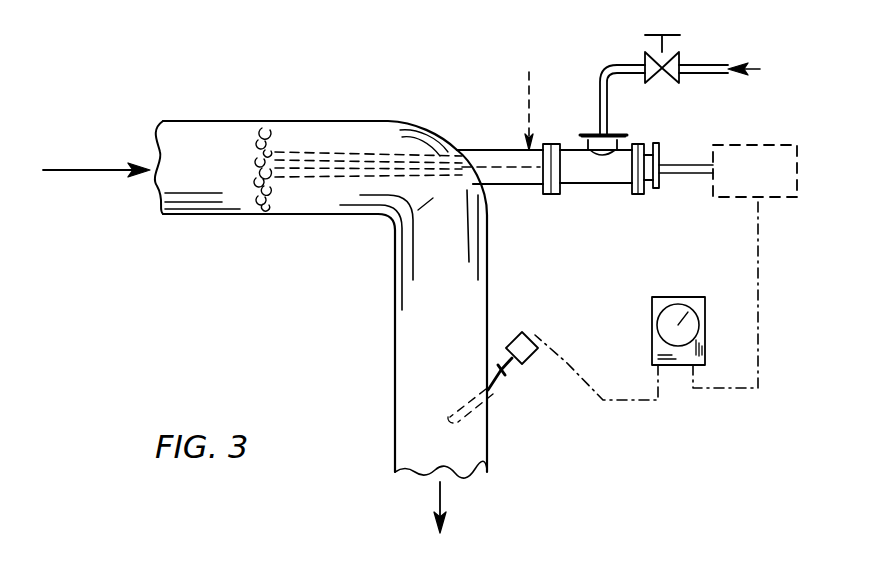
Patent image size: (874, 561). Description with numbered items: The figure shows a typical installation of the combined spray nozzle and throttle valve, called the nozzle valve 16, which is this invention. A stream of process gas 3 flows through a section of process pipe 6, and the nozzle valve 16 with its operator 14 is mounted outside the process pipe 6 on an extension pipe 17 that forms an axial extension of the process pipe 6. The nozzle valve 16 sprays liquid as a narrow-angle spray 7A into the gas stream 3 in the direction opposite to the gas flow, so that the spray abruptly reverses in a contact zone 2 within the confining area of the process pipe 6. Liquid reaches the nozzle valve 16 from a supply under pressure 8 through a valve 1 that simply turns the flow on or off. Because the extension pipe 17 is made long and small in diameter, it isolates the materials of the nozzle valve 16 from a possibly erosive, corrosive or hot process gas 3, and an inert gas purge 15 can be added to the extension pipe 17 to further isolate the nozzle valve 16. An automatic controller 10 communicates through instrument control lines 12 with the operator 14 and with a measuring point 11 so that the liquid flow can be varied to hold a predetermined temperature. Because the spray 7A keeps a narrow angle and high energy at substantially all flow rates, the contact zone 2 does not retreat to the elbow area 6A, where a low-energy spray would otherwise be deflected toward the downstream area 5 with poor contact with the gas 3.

The valve 1 is at (638, 52).
The contact zone 2 is at (267, 218).
The gas stream 3 is at (96, 157).
The downstream area 5 is at (452, 507).
The process pipe 6 is at (200, 120).
The elbow area 6A is at (393, 228).
The spray 7A is at (347, 157).
The liquid supply pressure 8 is at (730, 77).
The automatic controller 10 is at (650, 310).
The measuring point 11 is at (500, 377).
The instrument control lines 12 is at (693, 417).
The operator 14 is at (775, 140).
The inert gas purge 15 is at (520, 70).
The nozzle valve 16 is at (600, 190).
The extension pipe 17 is at (522, 192).